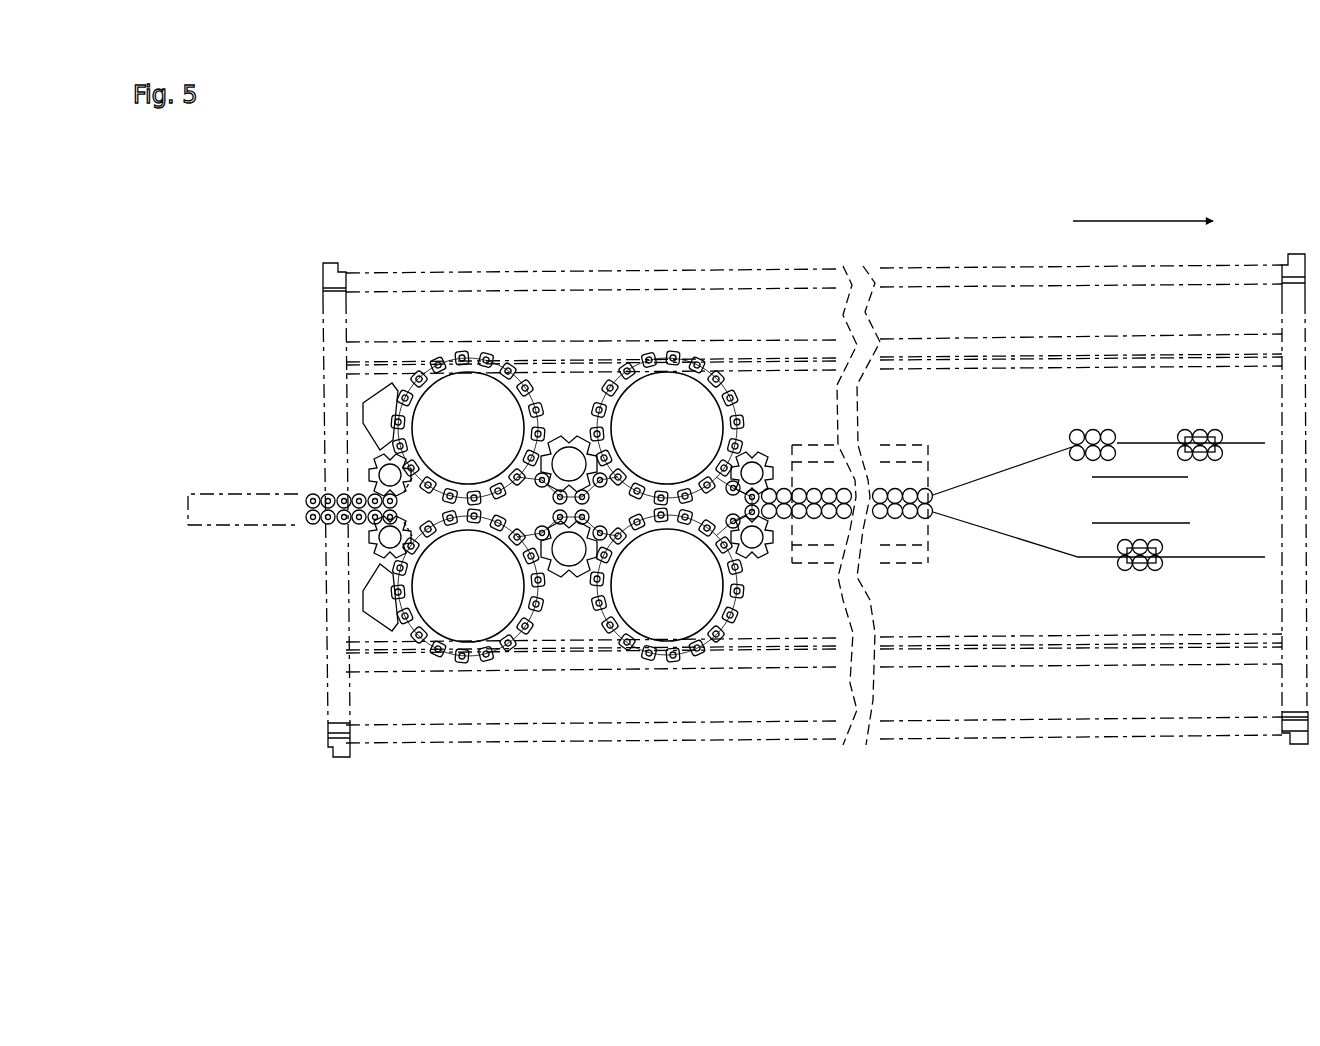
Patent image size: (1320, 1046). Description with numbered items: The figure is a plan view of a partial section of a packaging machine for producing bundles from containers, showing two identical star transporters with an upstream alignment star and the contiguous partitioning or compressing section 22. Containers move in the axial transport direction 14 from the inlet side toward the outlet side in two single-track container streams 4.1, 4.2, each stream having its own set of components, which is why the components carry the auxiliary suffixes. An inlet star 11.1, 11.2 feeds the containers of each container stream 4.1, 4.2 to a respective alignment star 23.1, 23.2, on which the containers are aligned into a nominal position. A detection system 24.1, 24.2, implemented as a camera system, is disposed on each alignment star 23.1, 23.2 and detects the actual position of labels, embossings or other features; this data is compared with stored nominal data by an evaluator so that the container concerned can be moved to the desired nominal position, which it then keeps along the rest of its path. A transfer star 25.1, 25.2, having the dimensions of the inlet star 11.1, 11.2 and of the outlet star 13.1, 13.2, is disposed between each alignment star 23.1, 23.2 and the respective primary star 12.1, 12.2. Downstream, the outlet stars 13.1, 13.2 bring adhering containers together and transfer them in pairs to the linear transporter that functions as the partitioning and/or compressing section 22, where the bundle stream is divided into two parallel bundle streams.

The single-track container stream 4.1 is at (300, 523).
The single-track container stream 4.2 is at (300, 495).
The inlet star 11.1 is at (390, 543).
The inlet star 11.2 is at (377, 473).
The primary star 12.1 is at (682, 617).
The primary star 12.2 is at (667, 407).
The outlet star 13.1 is at (766, 555).
The outlet star 13.2 is at (753, 458).
The axial transport direction 14 is at (1143, 212).
The partitioning and/or compressing section 22 is at (883, 468).
The alignment star 23.1 is at (467, 630).
The alignment star 23.2 is at (453, 410).
The detection system 24.1 is at (375, 620).
The detection system 24.2 is at (372, 400).
The transfer star 25.1 is at (572, 565).
The transfer star 25.2 is at (570, 437).